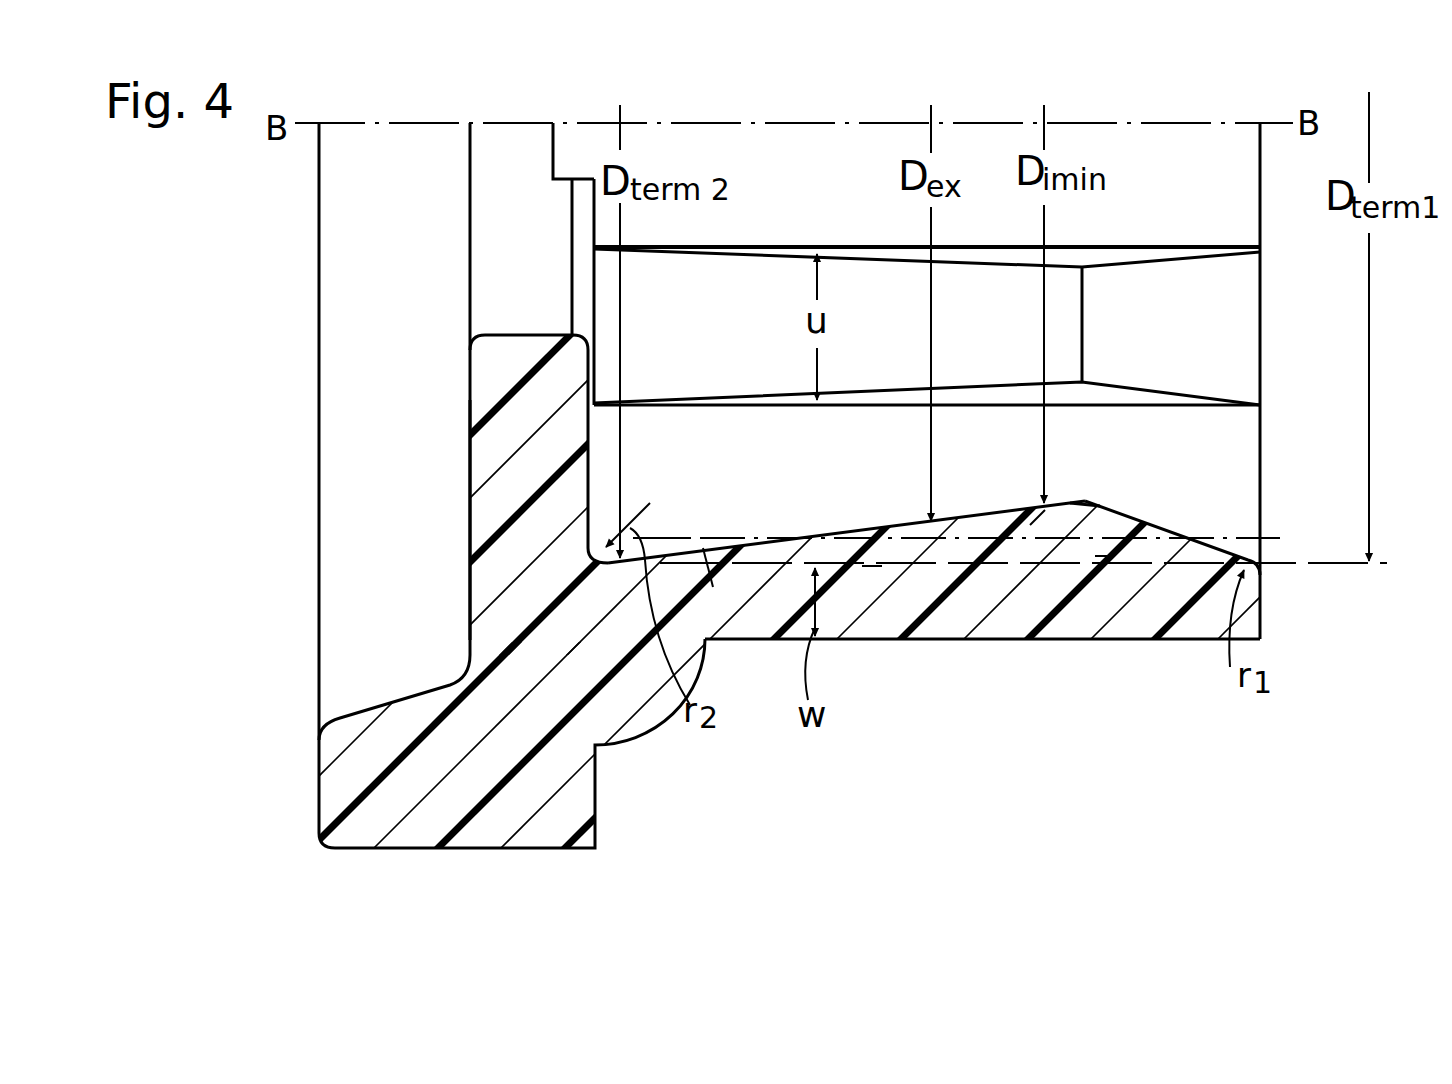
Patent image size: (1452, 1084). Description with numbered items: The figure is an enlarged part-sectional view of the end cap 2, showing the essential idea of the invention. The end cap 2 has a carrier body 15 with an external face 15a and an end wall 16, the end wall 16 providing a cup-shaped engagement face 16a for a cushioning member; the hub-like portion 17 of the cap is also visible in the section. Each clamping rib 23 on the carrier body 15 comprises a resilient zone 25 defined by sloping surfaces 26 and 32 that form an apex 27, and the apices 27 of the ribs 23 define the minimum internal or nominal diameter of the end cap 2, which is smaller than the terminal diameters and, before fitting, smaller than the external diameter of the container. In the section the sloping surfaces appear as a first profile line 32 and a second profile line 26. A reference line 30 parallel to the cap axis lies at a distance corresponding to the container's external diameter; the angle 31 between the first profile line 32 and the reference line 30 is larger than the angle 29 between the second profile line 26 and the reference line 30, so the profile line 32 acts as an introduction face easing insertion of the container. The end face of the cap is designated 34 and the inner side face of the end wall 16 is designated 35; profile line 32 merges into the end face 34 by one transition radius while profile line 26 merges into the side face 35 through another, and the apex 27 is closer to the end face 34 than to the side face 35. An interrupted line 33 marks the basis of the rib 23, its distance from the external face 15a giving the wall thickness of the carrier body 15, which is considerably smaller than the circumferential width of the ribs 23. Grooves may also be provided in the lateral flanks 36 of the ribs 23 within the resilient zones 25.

The end cap 2 is at (1310, 742).
The carrier body 15 is at (1097, 617).
The external face of the carrier body 15a is at (948, 642).
The end wall 16 is at (466, 462).
The cup-shaped engagement face 16a is at (466, 520).
The hub 17 is at (340, 785).
The clamping rib 23 is at (994, 496).
The resilient zone 25 is at (1037, 527).
The sloping surface (second profile line) 26 is at (911, 518).
The apex 27 is at (1084, 493).
The angle 29 is at (702, 528).
The reference line 30 is at (672, 528).
The angle 31 is at (1103, 552).
The sloping surface (first profile line) 32 is at (1173, 518).
The interrupted line 33 is at (872, 568).
The end face 34 is at (1265, 607).
The inner side face of the end wall 35 is at (598, 366).
The lateral flank 36 is at (1082, 262).